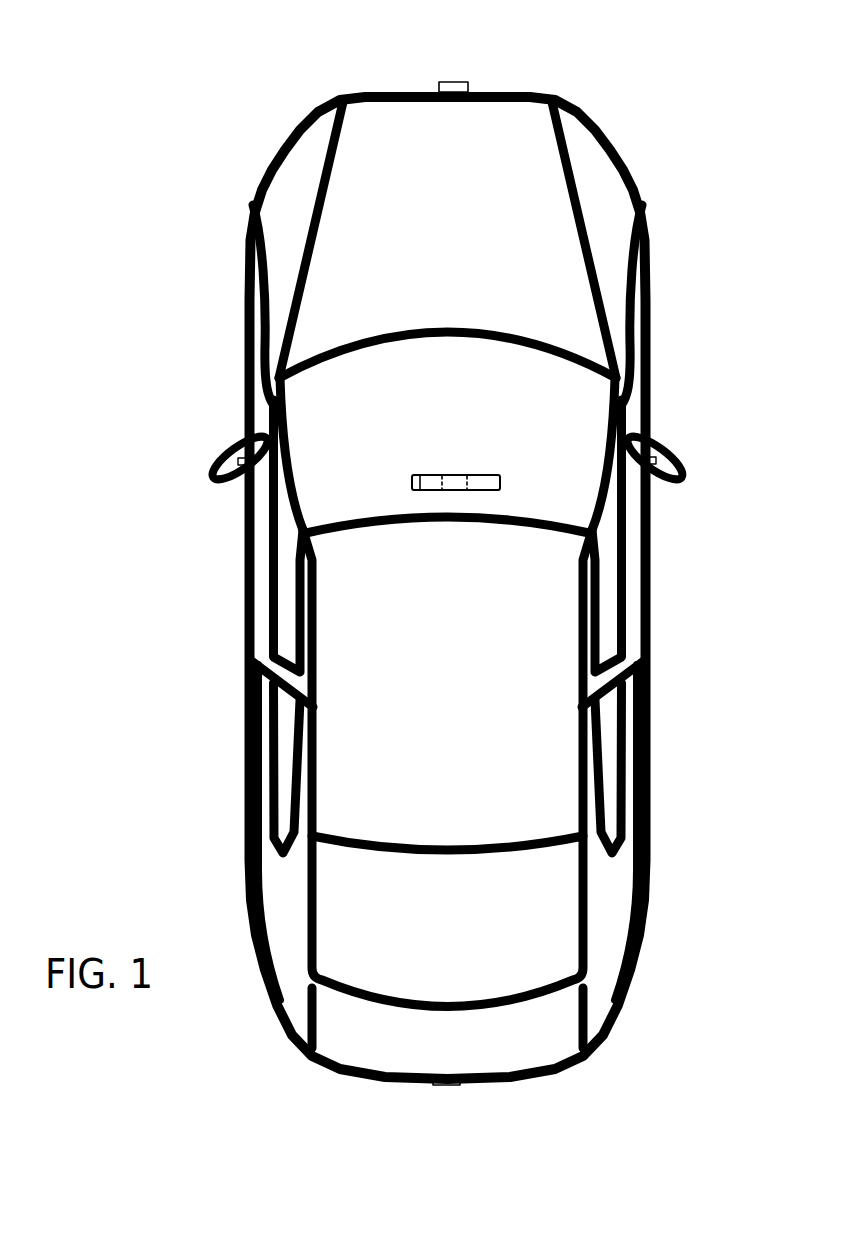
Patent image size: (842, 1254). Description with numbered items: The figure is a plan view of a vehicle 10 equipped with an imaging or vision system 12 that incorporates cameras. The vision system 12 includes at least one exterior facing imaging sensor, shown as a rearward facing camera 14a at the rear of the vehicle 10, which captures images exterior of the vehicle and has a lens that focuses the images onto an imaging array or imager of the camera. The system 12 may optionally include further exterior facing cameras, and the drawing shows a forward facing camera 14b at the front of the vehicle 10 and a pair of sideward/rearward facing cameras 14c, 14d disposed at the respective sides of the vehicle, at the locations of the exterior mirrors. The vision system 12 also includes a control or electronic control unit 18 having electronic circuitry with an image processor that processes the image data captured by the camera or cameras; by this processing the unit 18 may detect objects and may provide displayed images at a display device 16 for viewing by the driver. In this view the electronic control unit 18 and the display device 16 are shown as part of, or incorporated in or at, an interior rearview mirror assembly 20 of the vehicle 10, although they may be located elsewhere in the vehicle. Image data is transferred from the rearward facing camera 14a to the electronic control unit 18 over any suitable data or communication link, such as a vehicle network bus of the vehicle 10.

The vehicle 10 is at (198, 188).
The vision system 12 is at (397, 1105).
The rearward facing camera 14a is at (455, 1085).
The forward facing camera 14b is at (458, 83).
The sideward/rearward facing camera 14c is at (233, 452).
The sideward/rearward facing camera 14d is at (663, 453).
The display device 16 is at (428, 477).
The electronic control unit 18 is at (452, 475).
The interior rearview mirror assembly 20 is at (497, 475).